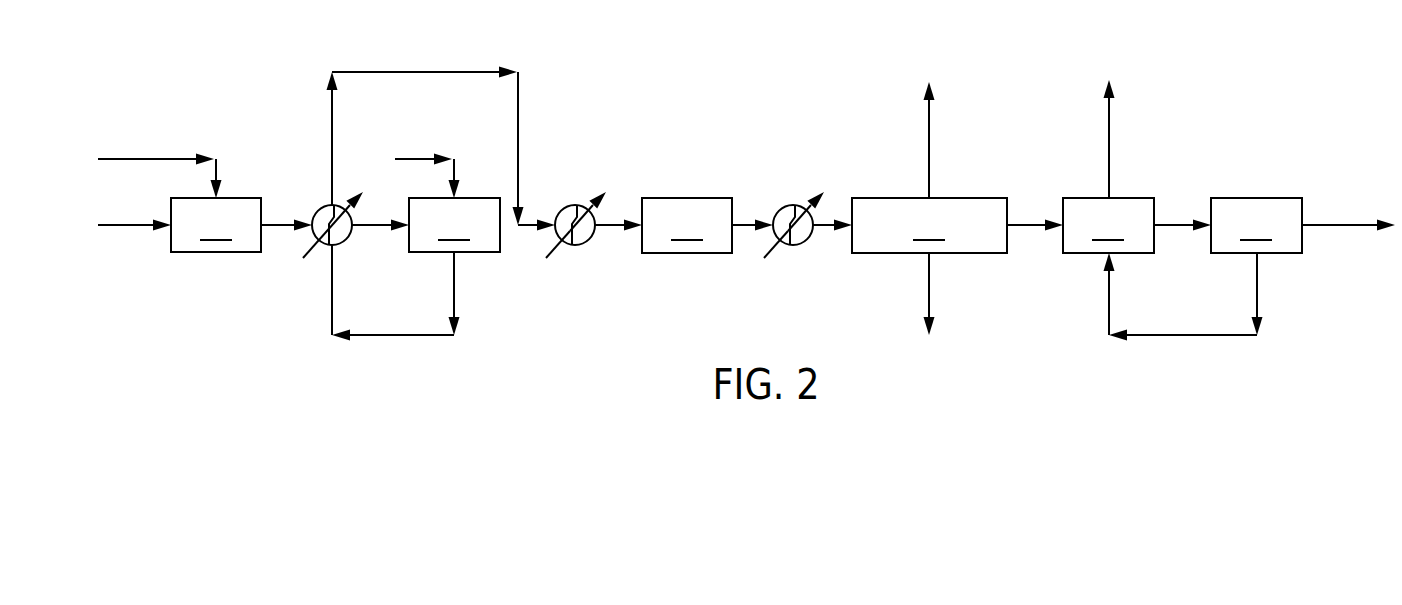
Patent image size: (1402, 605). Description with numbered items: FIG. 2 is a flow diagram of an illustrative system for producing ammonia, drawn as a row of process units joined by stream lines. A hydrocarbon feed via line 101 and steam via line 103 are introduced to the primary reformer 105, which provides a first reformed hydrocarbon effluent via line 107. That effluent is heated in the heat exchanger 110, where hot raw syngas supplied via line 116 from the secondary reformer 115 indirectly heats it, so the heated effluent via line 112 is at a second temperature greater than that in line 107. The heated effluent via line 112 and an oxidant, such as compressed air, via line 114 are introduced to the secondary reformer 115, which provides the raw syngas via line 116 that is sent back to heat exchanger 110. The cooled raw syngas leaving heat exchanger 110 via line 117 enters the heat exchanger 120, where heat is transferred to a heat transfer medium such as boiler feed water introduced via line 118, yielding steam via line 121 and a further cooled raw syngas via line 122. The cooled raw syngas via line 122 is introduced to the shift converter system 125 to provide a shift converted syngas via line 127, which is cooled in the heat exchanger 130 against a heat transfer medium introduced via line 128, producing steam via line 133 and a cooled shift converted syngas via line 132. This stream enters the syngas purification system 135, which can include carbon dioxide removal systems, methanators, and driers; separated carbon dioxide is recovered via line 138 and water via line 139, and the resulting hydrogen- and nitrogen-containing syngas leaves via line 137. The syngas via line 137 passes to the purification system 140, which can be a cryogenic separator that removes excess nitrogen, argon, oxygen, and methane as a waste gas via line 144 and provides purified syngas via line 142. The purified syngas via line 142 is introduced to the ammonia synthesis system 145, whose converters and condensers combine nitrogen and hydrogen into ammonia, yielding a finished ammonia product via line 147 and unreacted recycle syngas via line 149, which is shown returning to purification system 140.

The hydrocarbon feed line 101 is at (122, 228).
The steam line 103 is at (135, 157).
The primary reformer 105 is at (216, 225).
The effluent line 107 is at (280, 228).
The heat exchanger 110 is at (333, 225).
The heated effluent line 112 is at (375, 228).
The oxidant line 114 is at (419, 157).
The secondary reformer 115 is at (454, 225).
The raw syngas line 116 is at (400, 337).
The cooled raw syngas line 117 is at (457, 70).
The heat transfer medium line 118 is at (553, 255).
The heat exchanger 120 is at (560, 212).
The steam line 121 is at (598, 193).
The cooled raw syngas product line 122 is at (598, 232).
The shift converter system 125 is at (687, 225).
The shift converted syngas line 127 is at (743, 232).
The heat transfer medium line 128 is at (770, 253).
The heat exchanger 130 is at (778, 212).
The cooled shift converted syngas line 132 is at (817, 232).
The steam line 133 is at (816, 193).
The syngas purification system 135 is at (929, 225).
The syngas line 137 is at (1030, 222).
The carbon dioxide line 138 is at (930, 133).
The water line 139 is at (930, 290).
The purification system 140 is at (1108, 225).
The purified syngas line 142 is at (1173, 222).
The waste gas line 144 is at (1109, 127).
The ammonia synthesis system 145 is at (1256, 225).
The ammonia product line 147 is at (1346, 222).
The recycle syngas line 149 is at (1183, 333).